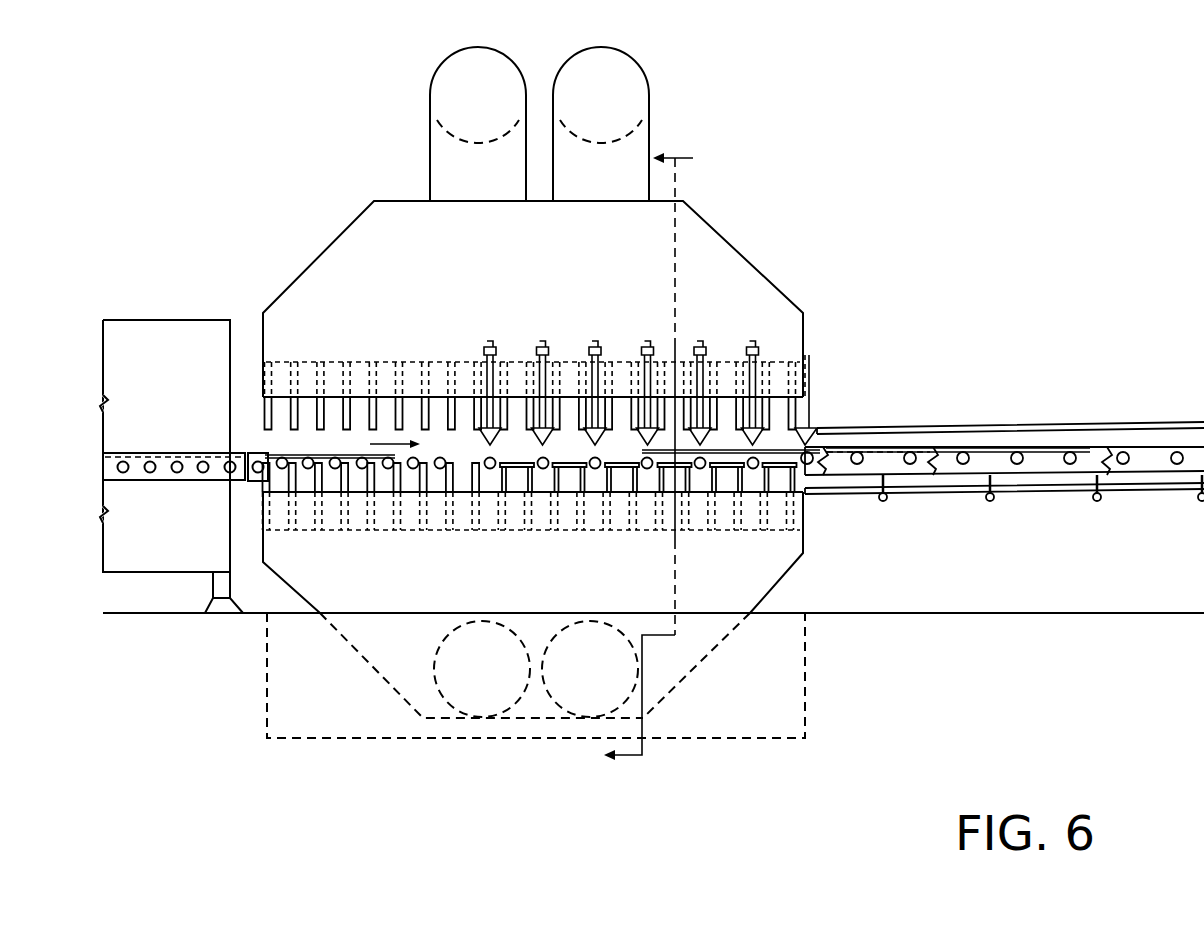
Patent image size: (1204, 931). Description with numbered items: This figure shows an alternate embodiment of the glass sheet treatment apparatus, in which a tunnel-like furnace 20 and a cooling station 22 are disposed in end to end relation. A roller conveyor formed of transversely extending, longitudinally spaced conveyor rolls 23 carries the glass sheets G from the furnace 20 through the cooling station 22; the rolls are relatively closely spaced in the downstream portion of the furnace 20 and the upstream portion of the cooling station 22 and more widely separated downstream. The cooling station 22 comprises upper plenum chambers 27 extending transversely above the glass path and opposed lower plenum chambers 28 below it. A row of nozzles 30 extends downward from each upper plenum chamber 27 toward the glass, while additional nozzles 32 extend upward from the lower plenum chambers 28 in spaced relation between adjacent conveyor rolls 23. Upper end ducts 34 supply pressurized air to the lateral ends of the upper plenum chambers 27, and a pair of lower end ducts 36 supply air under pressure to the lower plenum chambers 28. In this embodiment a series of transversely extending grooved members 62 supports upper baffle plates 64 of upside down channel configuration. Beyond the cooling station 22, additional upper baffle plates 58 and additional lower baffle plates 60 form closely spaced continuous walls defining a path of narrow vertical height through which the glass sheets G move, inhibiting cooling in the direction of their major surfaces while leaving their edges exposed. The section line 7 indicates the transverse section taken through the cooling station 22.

The tunnel-like furnace 20 is at (145, 310).
The cooling station 22 is at (369, 172).
The conveyor rolls 23 is at (163, 472).
The upper plenum chambers 27 is at (391, 360).
The lower plenum chambers 28 is at (392, 533).
The nozzles 30 is at (270, 432).
The nozzles 32 is at (270, 482).
The upper end ducts 34 is at (560, 66).
The lower end ducts 36 is at (560, 708).
The additional upper baffle plates 58 is at (938, 430).
The additional lower baffle plates 60 is at (975, 490).
The grooved members 62 is at (483, 445).
The upper baffle plates 64 is at (797, 428).
The section line 7- 7 is at (659, 455).
The glass sheets G is at (1073, 402).